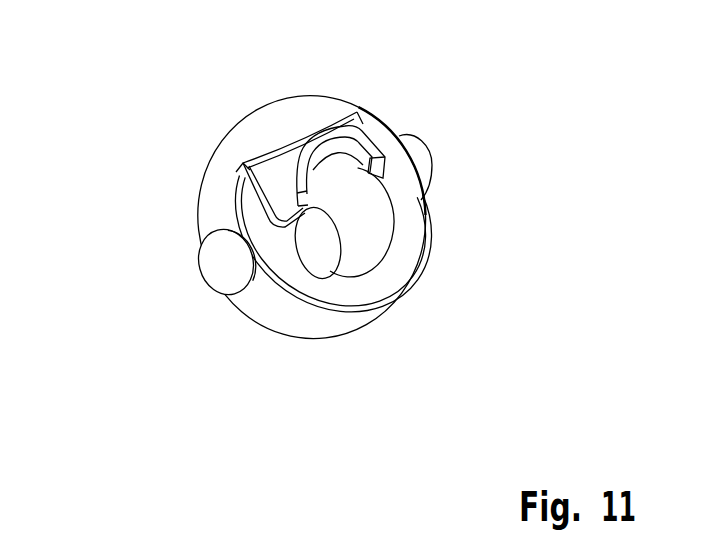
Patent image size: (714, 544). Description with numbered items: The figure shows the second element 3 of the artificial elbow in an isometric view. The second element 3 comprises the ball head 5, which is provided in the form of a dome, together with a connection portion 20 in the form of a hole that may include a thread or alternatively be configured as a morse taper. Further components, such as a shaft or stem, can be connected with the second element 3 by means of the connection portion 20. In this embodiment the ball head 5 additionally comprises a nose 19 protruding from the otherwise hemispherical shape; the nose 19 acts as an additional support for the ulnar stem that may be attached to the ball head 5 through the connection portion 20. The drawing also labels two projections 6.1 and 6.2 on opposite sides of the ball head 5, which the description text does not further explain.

The second element 3 is at (202, 342).
The ball head 5 is at (210, 203).
The first projection 6.1 is at (212, 270).
The second projection 6.2 is at (425, 163).
The nose 19 is at (307, 136).
The connection portion 20 is at (385, 216).